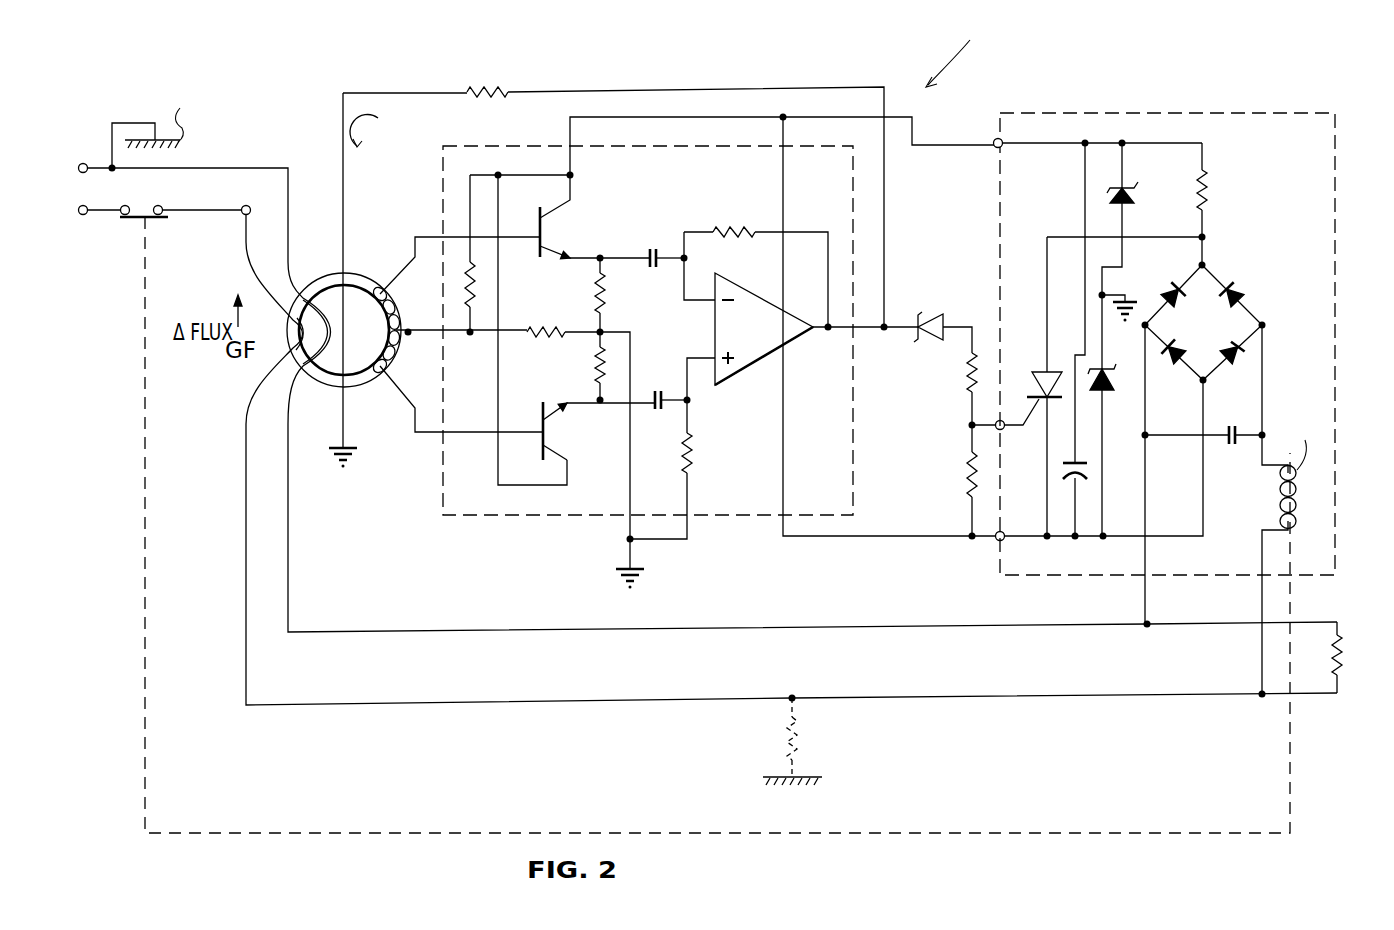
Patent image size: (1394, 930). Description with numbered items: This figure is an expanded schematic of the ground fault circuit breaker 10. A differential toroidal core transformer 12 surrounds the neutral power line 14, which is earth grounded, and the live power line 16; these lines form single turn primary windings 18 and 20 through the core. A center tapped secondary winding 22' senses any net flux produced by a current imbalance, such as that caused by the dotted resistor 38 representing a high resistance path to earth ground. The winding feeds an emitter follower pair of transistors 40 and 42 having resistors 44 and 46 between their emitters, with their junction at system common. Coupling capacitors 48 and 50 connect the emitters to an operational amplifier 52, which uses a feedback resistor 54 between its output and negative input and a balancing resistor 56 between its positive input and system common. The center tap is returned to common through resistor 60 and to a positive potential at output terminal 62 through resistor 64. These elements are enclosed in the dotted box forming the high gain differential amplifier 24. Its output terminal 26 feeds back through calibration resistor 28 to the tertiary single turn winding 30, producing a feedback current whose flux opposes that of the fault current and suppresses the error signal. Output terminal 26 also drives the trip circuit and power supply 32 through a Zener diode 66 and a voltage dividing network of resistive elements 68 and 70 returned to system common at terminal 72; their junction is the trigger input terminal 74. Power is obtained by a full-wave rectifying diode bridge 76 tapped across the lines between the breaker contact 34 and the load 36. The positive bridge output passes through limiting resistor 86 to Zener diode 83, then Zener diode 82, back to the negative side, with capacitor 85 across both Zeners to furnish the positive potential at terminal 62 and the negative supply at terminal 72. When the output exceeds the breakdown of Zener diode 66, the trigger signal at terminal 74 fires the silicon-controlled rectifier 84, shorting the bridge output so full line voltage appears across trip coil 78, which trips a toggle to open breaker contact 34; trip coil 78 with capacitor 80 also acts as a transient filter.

The ground fault circuit breaker 10 is at (965, 54).
The differential toroidal core transformer 12 is at (383, 386).
The neutral power line 14 is at (212, 168).
The live power line 16 is at (193, 212).
The single turn primary winding 18 is at (298, 332).
The single turn primary winding 20 is at (327, 328).
The center tapped secondary winding 22' is at (454, 332).
The high gain differential amplifier 24 is at (856, 482).
The output terminal 26 is at (884, 331).
The calibration resistor 28 is at (494, 86).
The tertiary single turn winding 30 is at (343, 207).
The trip circuit and power supply 32 is at (1335, 118).
The breaker contact 34 is at (130, 220).
The load 36 is at (1343, 664).
The dotted resistor 38 is at (783, 740).
The transistor 40 is at (552, 232).
The transistor 42 is at (547, 432).
The resistor 44 is at (606, 290).
The resistor 46 is at (595, 365).
The coupling capacitor 48 is at (653, 248).
The coupling capacitor 50 is at (657, 412).
The operational amplifier 52 is at (755, 345).
The feedback resistor 54 is at (735, 228).
The balancing resistor 56 is at (693, 450).
The resistor 60 is at (543, 327).
The output terminal 62 is at (995, 147).
The resistor 64 is at (468, 291).
The Zener diode 66 is at (929, 315).
The resistive element 68 is at (967, 378).
The resistive element 70 is at (967, 480).
The terminal 72 is at (1003, 532).
The trigger input terminal 74 is at (1003, 430).
The full-wave rectifying diode bridge 76 is at (1258, 302).
The trip coil 78 is at (1280, 507).
The capacitor 80 is at (1236, 440).
The Zener diode 82 is at (1112, 383).
The Zener diode 83 is at (1134, 198).
The silicon-controlled rectifier 84 is at (1052, 372).
The capacitor 85 is at (1076, 480).
The limiting resistor 86 is at (1210, 197).